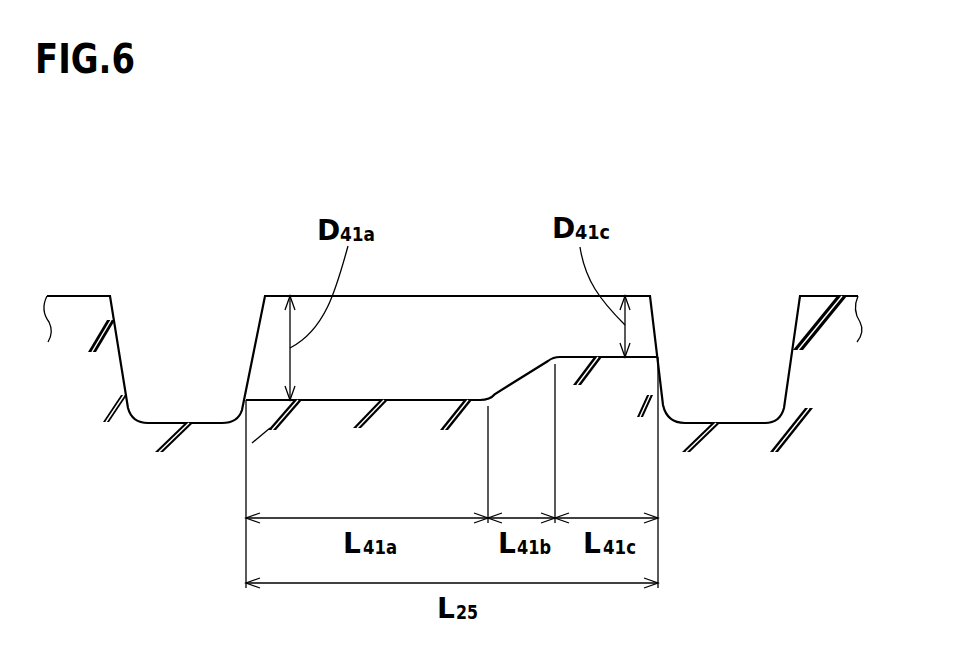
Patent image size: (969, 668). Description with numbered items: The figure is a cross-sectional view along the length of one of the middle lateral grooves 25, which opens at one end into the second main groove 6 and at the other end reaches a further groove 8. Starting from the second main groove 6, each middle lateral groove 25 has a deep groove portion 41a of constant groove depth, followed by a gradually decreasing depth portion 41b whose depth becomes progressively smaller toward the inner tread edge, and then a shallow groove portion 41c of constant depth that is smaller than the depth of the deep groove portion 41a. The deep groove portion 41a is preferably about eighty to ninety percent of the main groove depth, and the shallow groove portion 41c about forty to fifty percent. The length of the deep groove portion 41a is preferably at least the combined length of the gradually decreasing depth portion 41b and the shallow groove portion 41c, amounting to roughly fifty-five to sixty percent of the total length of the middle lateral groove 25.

The second main groove 6 is at (182, 330).
The second groove 8 is at (725, 330).
The middle lateral groove 25 is at (427, 345).
The deep groove portion 41a is at (322, 400).
The gradually decreasing depth portion 41b is at (518, 380).
The shallow groove portion 41c is at (577, 357).